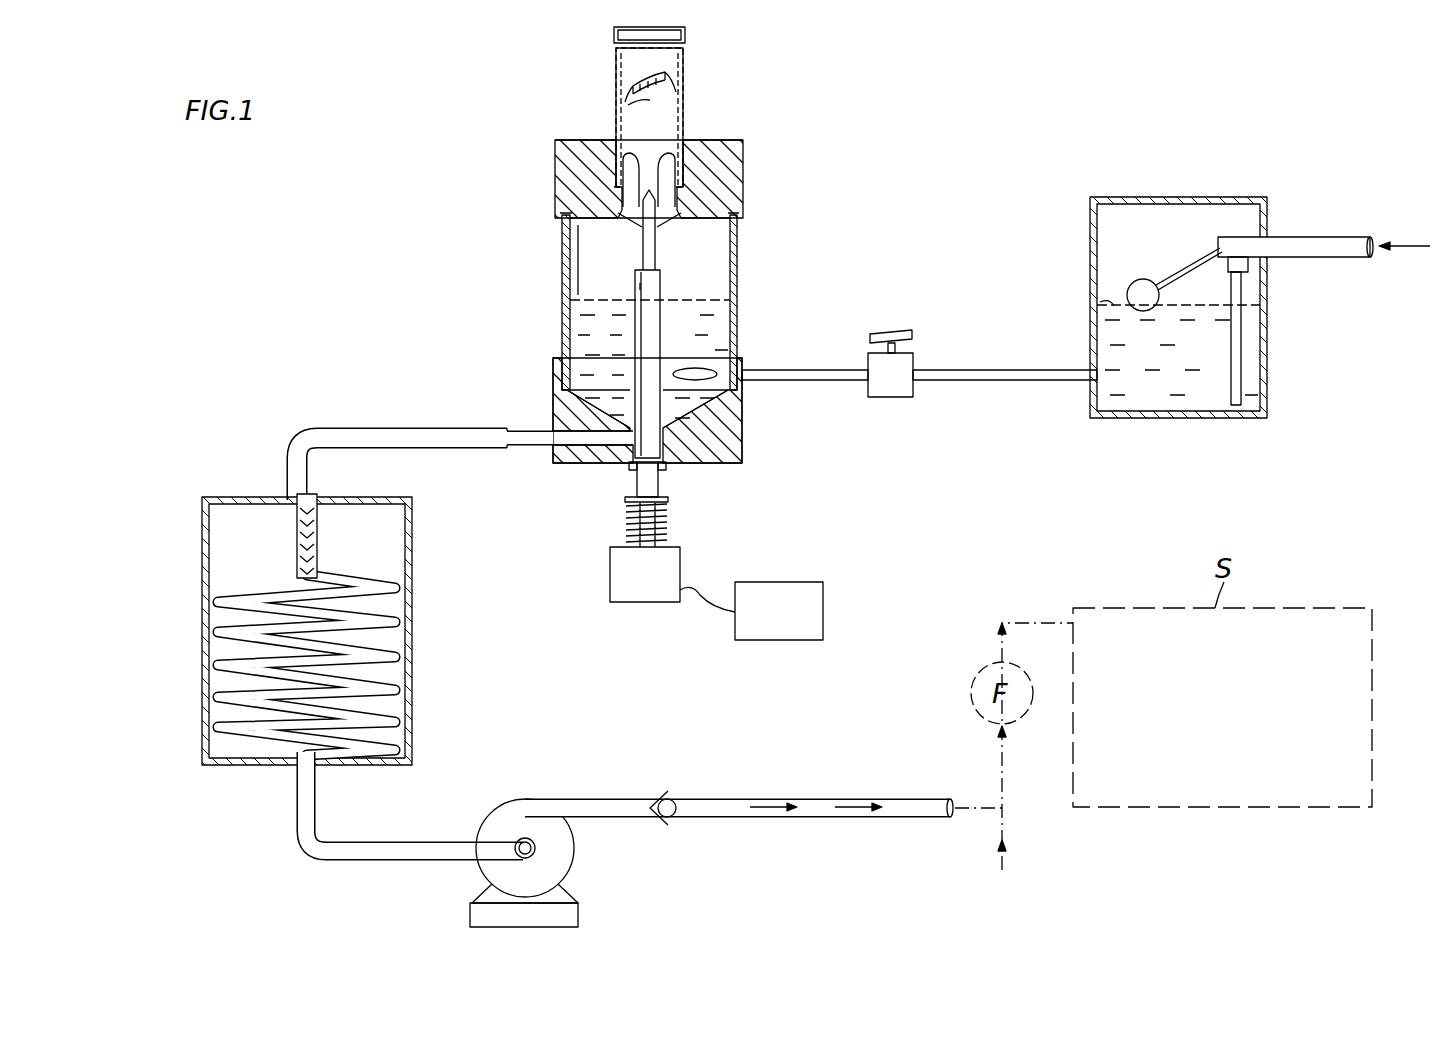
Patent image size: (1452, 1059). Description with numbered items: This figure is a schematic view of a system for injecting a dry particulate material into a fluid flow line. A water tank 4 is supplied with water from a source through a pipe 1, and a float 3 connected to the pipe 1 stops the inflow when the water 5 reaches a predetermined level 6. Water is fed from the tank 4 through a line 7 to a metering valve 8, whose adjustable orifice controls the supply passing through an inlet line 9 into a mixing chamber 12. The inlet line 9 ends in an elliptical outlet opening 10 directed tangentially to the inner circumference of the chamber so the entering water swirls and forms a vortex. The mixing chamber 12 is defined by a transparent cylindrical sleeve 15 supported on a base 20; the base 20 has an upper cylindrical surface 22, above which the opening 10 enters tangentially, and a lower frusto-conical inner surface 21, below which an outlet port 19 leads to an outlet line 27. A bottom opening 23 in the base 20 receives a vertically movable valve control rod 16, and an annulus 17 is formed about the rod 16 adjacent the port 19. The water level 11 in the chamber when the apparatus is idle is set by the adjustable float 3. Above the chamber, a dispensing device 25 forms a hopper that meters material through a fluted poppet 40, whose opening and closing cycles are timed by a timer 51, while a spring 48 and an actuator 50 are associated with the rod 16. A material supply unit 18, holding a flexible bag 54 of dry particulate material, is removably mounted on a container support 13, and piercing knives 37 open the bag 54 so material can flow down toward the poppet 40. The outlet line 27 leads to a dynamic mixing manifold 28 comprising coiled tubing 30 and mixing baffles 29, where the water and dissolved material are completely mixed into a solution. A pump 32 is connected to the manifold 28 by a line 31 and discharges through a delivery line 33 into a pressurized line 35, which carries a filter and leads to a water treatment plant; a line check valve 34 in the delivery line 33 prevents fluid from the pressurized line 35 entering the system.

The pipe 1 is at (1416, 252).
The float 3 is at (1143, 280).
The water tank 4 is at (1112, 197).
The water 5 is at (1208, 398).
The predetermined level 6 is at (1110, 300).
The line 7 is at (1000, 382).
The metering valve 8 is at (900, 362).
The inlet line 9 is at (823, 381).
The elliptical outlet opening 10 is at (695, 372).
The water level 11 is at (700, 300).
The mixing chamber 12 is at (710, 245).
The container support 13 is at (574, 179).
The transparent cylindrical sleeve 15 is at (562, 240).
The valve control rod 16 is at (636, 281).
The annulus 17 is at (705, 463).
The material supply unit 18 is at (684, 78).
The outlet port 19 is at (583, 452).
The base 20 is at (655, 416).
The frusto-conical inner surface 21 is at (590, 398).
The upper cylindrical surface 22 is at (575, 372).
The bottom opening 23 is at (638, 466).
The dispensing device 25 is at (758, 154).
The outlet line 27 is at (393, 428).
The dynamic mixing manifold 28 is at (252, 498).
The mixing baffles 29 is at (300, 535).
The coiled tubing 30 is at (215, 632).
The line 31 is at (300, 840).
The pump 32 is at (503, 800).
The delivery line 33 is at (597, 800).
The line check valve 34 is at (668, 812).
The pressurized line 35 is at (1007, 832).
The piercing knives 37 is at (665, 190).
The poppet 40 is at (660, 212).
The spring 48 is at (670, 533).
The actuator 50 is at (650, 600).
The timer 51 is at (823, 617).
The flexible bag 54 is at (635, 103).